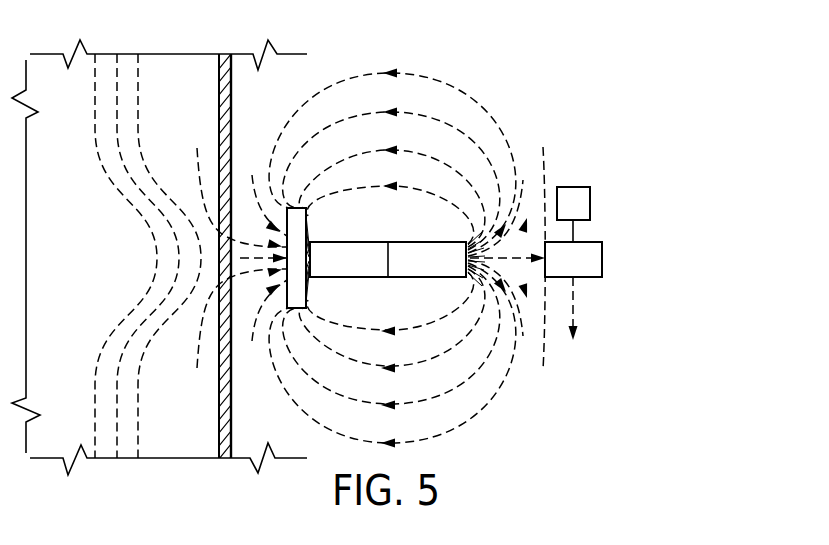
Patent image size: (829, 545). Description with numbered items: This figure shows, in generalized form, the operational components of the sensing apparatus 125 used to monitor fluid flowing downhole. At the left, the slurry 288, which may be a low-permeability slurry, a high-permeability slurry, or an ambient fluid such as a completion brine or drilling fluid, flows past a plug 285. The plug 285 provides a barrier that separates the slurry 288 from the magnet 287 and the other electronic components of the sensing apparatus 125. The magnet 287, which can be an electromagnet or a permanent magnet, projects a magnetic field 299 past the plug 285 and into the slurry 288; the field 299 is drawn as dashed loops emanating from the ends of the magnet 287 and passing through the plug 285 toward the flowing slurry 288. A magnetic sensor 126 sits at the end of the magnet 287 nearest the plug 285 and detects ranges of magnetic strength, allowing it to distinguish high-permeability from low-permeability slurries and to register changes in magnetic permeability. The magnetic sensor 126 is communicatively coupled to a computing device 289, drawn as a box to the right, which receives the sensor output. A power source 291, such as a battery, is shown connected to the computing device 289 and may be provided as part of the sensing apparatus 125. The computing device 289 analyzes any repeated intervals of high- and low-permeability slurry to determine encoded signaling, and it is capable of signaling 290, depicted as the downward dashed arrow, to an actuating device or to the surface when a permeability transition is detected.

The sensing apparatus 125 is at (310, 322).
The magnetic sensor 126 is at (307, 287).
The plug 285 is at (231, 107).
The magnet 287 is at (380, 242).
The slurry 288 is at (147, 307).
The sensor / processing unit 289 is at (602, 262).
The signaling 290 is at (575, 306).
The power source 291 is at (590, 200).
The magnetic field lines 299 is at (436, 82).